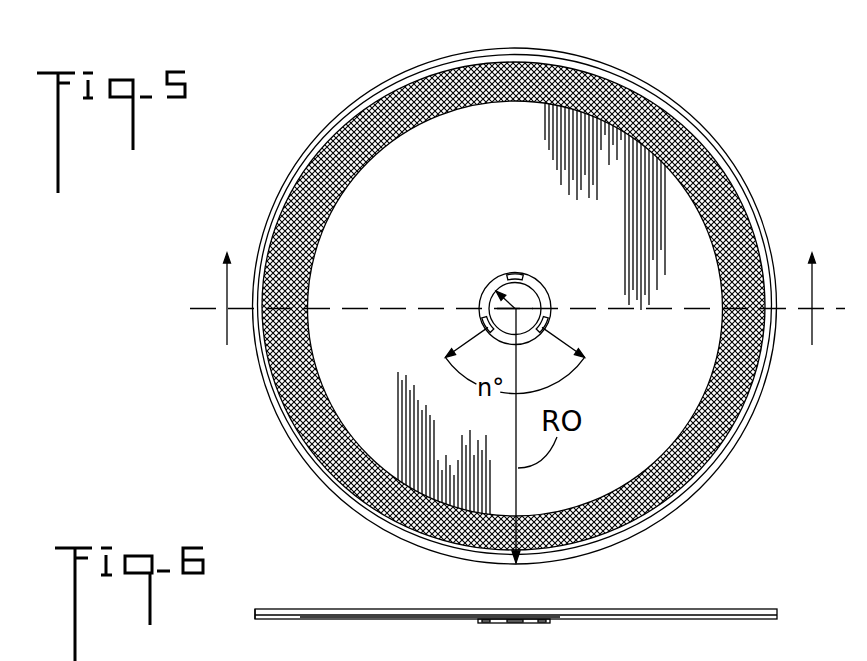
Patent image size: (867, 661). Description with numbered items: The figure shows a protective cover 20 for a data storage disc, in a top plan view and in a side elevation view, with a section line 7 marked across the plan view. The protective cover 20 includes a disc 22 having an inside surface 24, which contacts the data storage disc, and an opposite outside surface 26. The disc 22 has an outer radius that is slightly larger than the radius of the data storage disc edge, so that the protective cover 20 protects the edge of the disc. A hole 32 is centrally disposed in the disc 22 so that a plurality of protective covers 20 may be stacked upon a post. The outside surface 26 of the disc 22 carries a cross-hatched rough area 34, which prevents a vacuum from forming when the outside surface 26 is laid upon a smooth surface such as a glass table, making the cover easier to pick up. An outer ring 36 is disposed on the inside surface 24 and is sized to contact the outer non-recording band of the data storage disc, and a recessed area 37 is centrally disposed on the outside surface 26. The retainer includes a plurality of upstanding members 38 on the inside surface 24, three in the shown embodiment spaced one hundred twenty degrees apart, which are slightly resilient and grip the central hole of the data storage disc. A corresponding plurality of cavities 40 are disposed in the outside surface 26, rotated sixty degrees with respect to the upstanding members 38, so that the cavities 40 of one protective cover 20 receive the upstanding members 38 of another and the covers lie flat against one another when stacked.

In FIG. 5, the section line 7- 7 is at (520, 312).
In FIG. 5, the protective cover 20 is at (763, 135).
In FIG. 6, the protective cover 20 is at (764, 583).
In FIG. 5, the disc 22 is at (595, 197).
In FIG. 6, the inside surface 24 is at (340, 619).
In FIG. 5, the outside surface 26 is at (523, 229).
In FIG. 6, the outside surface 26 is at (343, 609).
In FIG. 5, the hole 32 is at (528, 300).
In FIG. 5, the rough area 34 is at (325, 172).
In FIG. 6, the outer ring 36 is at (270, 620).
In FIG. 5, the recessed area 37 is at (480, 304).
In FIG. 6, the recessed area 37 is at (525, 640).
In FIG. 6, the upstanding members 38 is at (490, 623).
In FIG. 5, the cavities 40 is at (513, 272).